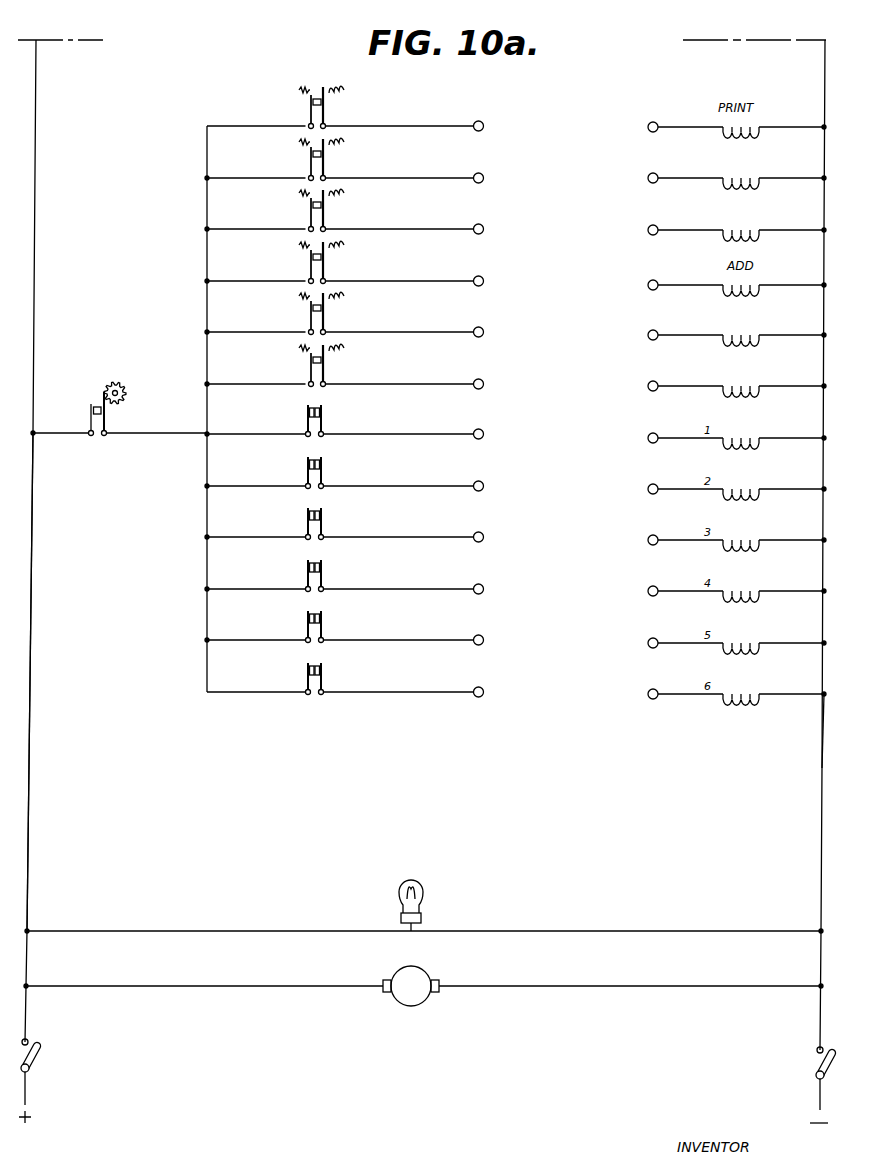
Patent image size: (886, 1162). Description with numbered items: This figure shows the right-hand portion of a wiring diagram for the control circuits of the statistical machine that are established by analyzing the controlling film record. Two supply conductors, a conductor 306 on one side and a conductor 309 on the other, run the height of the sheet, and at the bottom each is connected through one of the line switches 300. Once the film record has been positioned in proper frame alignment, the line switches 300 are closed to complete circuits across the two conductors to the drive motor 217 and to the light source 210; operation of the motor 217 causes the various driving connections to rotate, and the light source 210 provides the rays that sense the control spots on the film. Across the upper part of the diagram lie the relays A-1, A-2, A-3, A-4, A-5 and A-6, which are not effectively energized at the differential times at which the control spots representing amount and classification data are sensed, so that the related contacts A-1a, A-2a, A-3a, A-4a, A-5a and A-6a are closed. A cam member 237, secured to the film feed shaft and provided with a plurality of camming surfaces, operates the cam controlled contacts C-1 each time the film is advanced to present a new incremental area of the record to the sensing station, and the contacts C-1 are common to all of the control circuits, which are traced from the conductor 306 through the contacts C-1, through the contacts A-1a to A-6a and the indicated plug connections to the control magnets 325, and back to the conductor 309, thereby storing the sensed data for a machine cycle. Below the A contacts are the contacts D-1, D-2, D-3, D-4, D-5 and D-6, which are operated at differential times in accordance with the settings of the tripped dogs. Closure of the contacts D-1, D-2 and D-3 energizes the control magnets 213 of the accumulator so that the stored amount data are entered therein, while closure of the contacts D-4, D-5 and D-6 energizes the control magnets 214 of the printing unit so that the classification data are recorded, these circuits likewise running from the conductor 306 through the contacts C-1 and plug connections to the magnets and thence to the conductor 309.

The relay A-1 is at (350, 94).
The relay A-2 is at (350, 146).
The relay A-3 is at (350, 197).
The relay A-4 is at (350, 249).
The relay A-5 is at (350, 300).
The relay A-6 is at (350, 352).
The contact A-1a is at (311, 108).
The contact A-2a is at (311, 160).
The contact A-3a is at (311, 211).
The contact A-4a is at (311, 263).
The contact A-5a is at (311, 314).
The contact A-6a is at (311, 366).
The contact D-1 is at (323, 417).
The contact D-2 is at (323, 469).
The contact D-3 is at (323, 520).
The contact D-4 is at (323, 572).
The contact D-5 is at (323, 623).
The contact D-6 is at (323, 675).
The cam controlled contacts C-1 is at (90, 417).
The cam member 237 is at (123, 400).
The control magnets of the printing unit 214 is at (748, 176).
The control magnets of the accumulator 213 is at (748, 333).
The control magnets 325 is at (757, 692).
The conductor 306 is at (34, 622).
The conductor 309 is at (821, 768).
The light source 210 is at (422, 901).
The motor 217 is at (430, 974).
The line switches 300 is at (41, 1059).